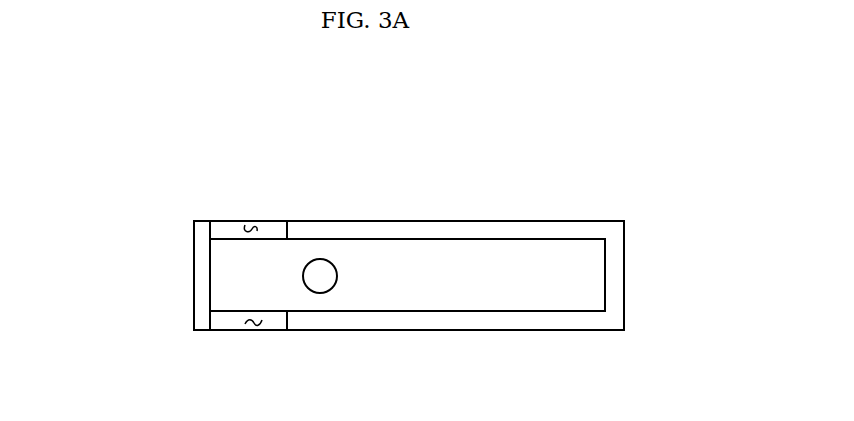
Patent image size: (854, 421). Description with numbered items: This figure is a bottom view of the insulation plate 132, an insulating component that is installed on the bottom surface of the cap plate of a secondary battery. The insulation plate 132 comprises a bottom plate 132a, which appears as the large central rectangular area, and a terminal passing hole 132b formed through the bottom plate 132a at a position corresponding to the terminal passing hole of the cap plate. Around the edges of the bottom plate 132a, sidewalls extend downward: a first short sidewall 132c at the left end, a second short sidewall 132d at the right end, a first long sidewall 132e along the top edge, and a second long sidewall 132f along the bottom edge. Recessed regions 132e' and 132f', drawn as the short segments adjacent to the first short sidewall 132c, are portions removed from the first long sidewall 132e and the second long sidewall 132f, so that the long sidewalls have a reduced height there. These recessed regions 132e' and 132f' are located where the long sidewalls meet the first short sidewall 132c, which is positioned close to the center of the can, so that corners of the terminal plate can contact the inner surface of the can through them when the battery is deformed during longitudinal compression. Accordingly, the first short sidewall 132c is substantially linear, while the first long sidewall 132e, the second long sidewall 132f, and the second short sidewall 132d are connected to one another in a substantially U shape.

The insulation plate 132 is at (640, 179).
The bottom plate 132a is at (220, 277).
The terminal passing hole 132b is at (320, 259).
The first short sidewall 132c is at (198, 239).
The second short sidewall 132d is at (615, 274).
The first long sidewall 132e is at (446, 202).
The recessed region 132e' is at (249, 202).
The second long sidewall 132f is at (446, 349).
The recessed region 132f' is at (248, 349).